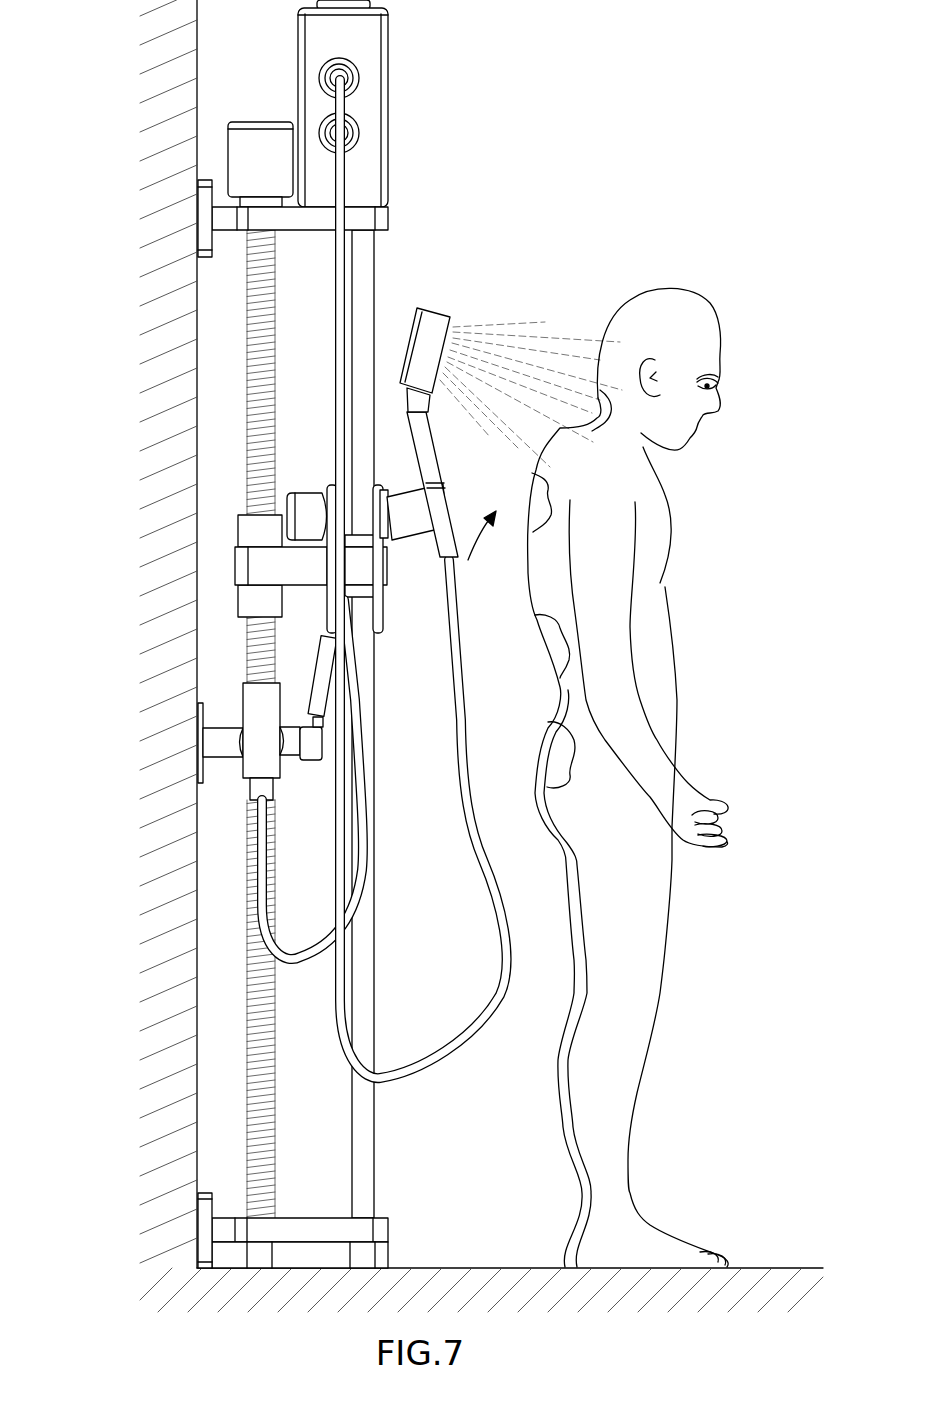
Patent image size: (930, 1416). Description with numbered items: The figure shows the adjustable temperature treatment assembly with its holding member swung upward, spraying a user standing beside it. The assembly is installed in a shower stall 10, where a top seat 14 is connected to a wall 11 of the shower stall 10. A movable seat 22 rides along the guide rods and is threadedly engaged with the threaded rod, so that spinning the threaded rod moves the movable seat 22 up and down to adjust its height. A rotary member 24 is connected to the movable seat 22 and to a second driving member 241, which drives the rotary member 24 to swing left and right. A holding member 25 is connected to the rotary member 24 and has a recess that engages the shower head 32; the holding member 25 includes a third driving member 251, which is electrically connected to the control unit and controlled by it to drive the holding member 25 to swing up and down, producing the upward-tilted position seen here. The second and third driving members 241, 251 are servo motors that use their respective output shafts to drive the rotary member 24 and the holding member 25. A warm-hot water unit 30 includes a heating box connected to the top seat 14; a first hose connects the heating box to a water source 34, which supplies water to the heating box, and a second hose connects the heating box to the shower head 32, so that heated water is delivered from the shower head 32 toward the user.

The shower stall 10 is at (200, 348).
The wall 11 is at (168, 634).
The top seat 14 is at (226, 226).
The movable seat 22 is at (247, 563).
The rotary member 24 is at (308, 500).
The second driving member 241 is at (330, 598).
The holding member 25 is at (410, 488).
The third driving member 251 is at (330, 490).
The warm-hot water unit 30 is at (392, 126).
The shower head 32 is at (437, 315).
The water source 34 is at (250, 692).